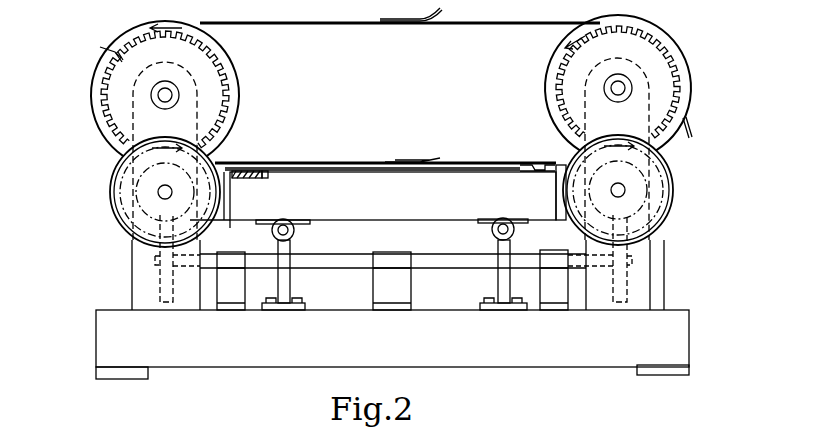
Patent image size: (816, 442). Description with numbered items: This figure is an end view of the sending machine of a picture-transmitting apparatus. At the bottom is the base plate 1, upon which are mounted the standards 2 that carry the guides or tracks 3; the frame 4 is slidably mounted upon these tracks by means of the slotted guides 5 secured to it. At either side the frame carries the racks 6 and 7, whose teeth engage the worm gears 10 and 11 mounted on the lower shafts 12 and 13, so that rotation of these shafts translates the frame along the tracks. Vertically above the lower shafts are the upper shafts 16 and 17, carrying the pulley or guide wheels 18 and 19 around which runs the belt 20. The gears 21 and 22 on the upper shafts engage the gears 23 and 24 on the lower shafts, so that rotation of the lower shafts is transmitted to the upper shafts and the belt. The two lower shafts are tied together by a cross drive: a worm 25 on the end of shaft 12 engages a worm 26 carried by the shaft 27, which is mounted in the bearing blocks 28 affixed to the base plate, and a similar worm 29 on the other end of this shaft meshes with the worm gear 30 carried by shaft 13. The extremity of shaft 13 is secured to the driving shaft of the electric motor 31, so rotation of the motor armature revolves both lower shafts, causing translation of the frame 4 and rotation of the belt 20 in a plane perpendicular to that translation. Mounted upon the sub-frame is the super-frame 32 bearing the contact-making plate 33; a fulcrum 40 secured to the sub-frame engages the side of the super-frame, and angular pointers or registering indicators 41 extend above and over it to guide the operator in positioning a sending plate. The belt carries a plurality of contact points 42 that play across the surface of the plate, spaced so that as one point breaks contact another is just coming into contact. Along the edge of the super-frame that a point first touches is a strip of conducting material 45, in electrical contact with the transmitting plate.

The base plate 1 is at (392, 344).
The standards 2 is at (291, 280).
The guides or tracks 3 is at (283, 219).
The frame 4 is at (373, 196).
The slotted guides 5 is at (300, 226).
The rack 6 is at (227, 216).
The rack 7 is at (559, 202).
The worm gear 10 is at (113, 190).
The worm gear 11 is at (668, 180).
The shaft 12 is at (165, 198).
The shaft 13 is at (618, 183).
The shaft 16 is at (165, 92).
The shaft 17 is at (618, 85).
The pulley or guide wheel 18 is at (222, 57).
The pulley or guide wheel 19 is at (558, 60).
The belt 20 is at (487, 22).
The gear 21 is at (222, 99).
The gear 22 is at (676, 90).
The gear 23 is at (138, 217).
The gear 24 is at (656, 199).
The worm 25 is at (137, 181).
The worm 26 is at (160, 287).
The shaft 27 is at (357, 256).
The bearing blocks 28 is at (392, 280).
The worm 29 is at (622, 283).
The worm gear 30 is at (634, 216).
The electric motor 31 is at (660, 288).
The super-frame 32 is at (432, 170).
The contact-making plate 33 is at (347, 165).
The fulcrum 40 is at (247, 181).
The angular pointers or registering indicators 41 is at (529, 164).
The contact points 42 is at (694, 134).
The strip of conducting material 45 is at (265, 178).